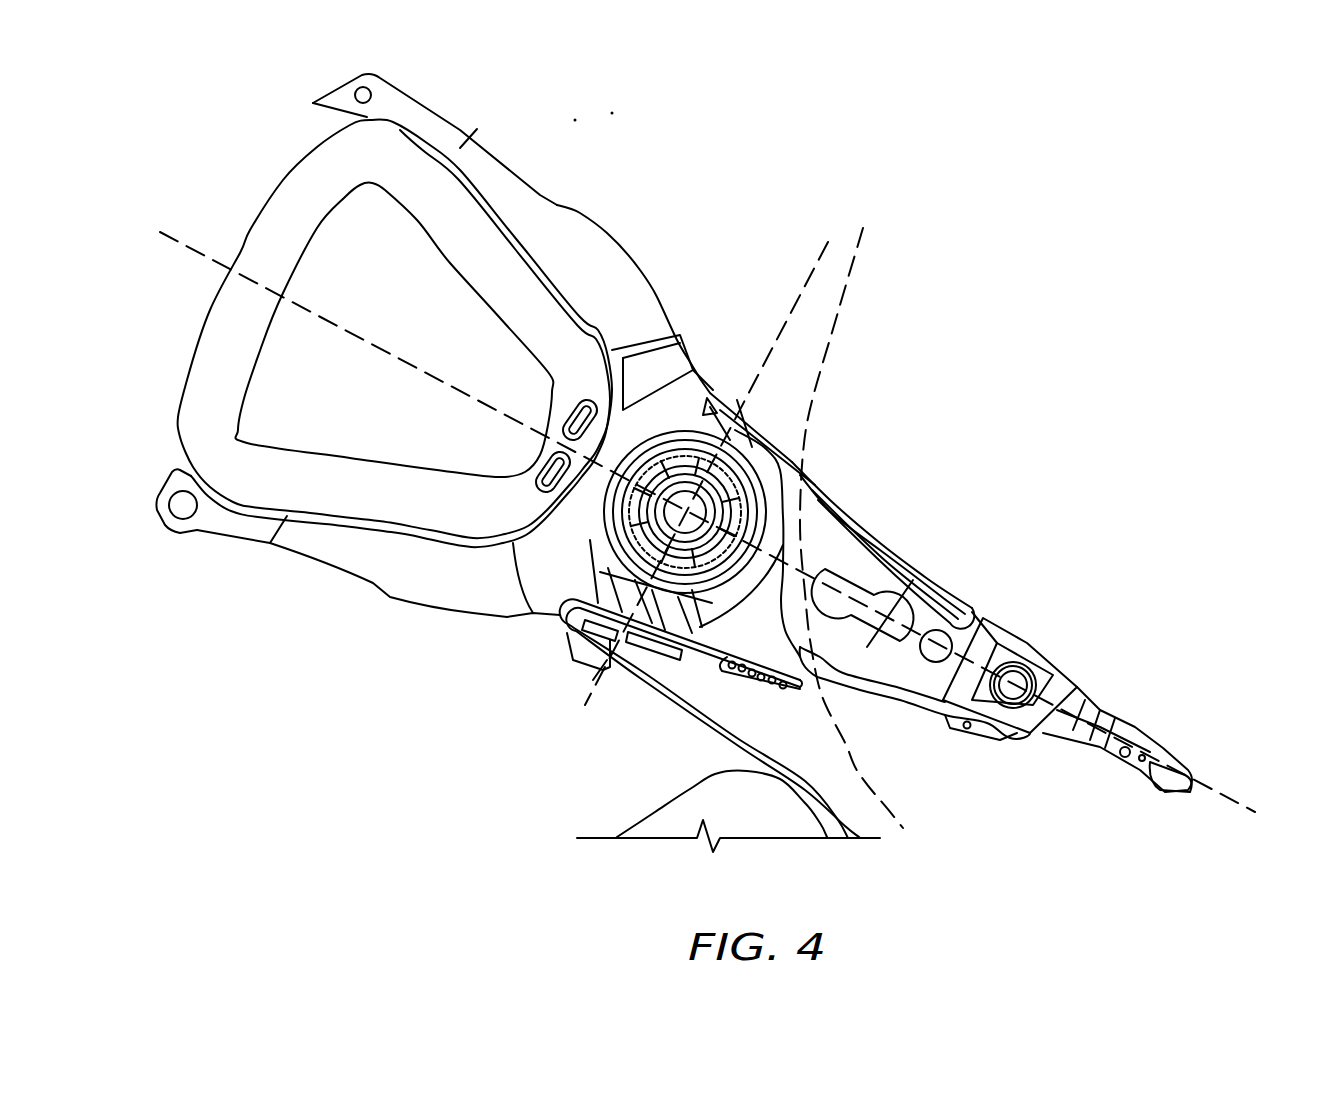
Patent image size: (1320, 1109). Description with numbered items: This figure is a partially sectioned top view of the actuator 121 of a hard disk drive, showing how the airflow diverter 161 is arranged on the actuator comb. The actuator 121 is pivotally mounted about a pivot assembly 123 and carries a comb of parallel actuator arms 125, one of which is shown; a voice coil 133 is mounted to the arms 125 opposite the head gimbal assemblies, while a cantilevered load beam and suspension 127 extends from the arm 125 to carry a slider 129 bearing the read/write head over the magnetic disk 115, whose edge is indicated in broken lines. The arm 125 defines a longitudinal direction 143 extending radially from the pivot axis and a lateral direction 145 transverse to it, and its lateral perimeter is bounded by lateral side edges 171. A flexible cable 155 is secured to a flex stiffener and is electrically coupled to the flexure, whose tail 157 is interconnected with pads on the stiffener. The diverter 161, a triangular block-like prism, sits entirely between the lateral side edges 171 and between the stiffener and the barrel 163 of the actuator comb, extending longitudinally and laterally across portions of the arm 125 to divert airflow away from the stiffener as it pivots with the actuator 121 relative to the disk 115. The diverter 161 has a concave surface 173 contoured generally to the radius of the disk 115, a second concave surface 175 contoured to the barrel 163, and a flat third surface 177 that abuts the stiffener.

The magnetic disk 115 is at (860, 232).
The actuator 121 is at (1020, 258).
The pivot assembly 123 is at (650, 512).
The actuator arm 125 is at (880, 537).
The load beam and suspension 127 is at (1097, 722).
The slider 129 is at (1190, 768).
The voice coil 133 is at (217, 333).
The longitudinal direction 143 is at (893, 627).
The lateral direction 145 is at (795, 302).
The flexible cable 155 is at (630, 670).
The tail 157 is at (770, 692).
The diverter 161 is at (832, 690).
The barrel 163 is at (810, 492).
The lateral side edges 171 is at (818, 466).
The concave surface 173 is at (797, 616).
The second concave surface 175 is at (725, 490).
The third surface 177 is at (693, 668).